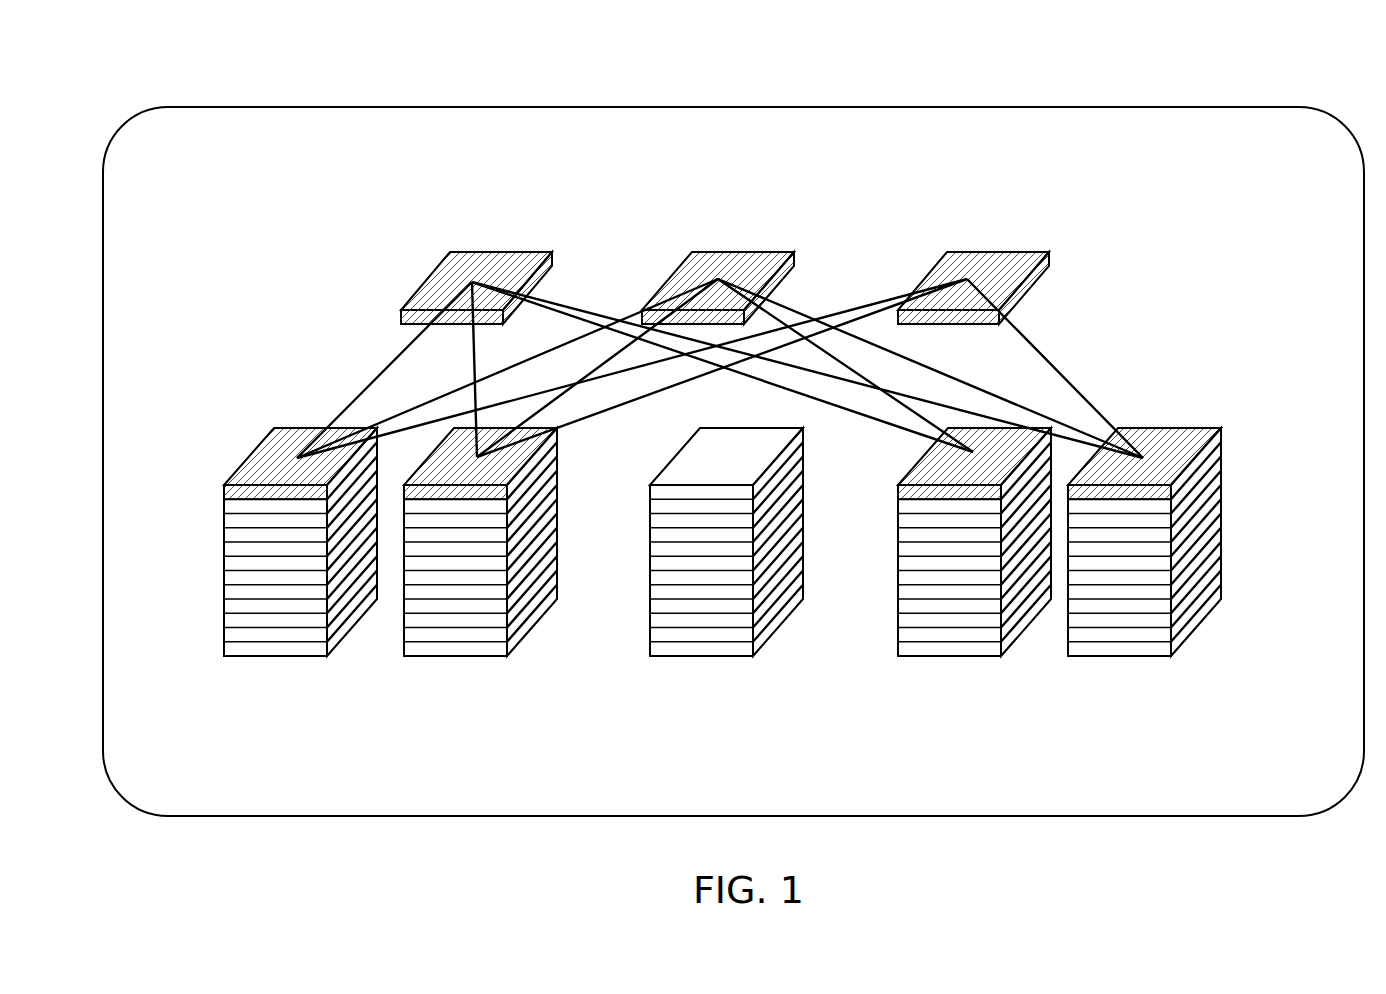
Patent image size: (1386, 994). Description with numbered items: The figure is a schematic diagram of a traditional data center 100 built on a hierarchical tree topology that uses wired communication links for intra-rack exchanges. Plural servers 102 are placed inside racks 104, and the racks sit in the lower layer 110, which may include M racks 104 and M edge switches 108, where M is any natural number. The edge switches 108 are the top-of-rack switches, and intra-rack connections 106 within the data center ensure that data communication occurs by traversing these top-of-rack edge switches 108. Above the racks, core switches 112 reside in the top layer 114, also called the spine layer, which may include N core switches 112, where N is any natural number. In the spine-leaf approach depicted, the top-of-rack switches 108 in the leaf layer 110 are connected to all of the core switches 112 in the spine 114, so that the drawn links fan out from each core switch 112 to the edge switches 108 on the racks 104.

The data center 100 is at (1247, 75).
The server 102 is at (221, 576).
The rack 104 is at (290, 712).
The intra-rack connection 106 is at (1058, 363).
The edge switch 108 is at (1144, 527).
The lower layer 110 is at (730, 580).
The core switch 112 is at (1037, 276).
The top layer 114 is at (870, 320).